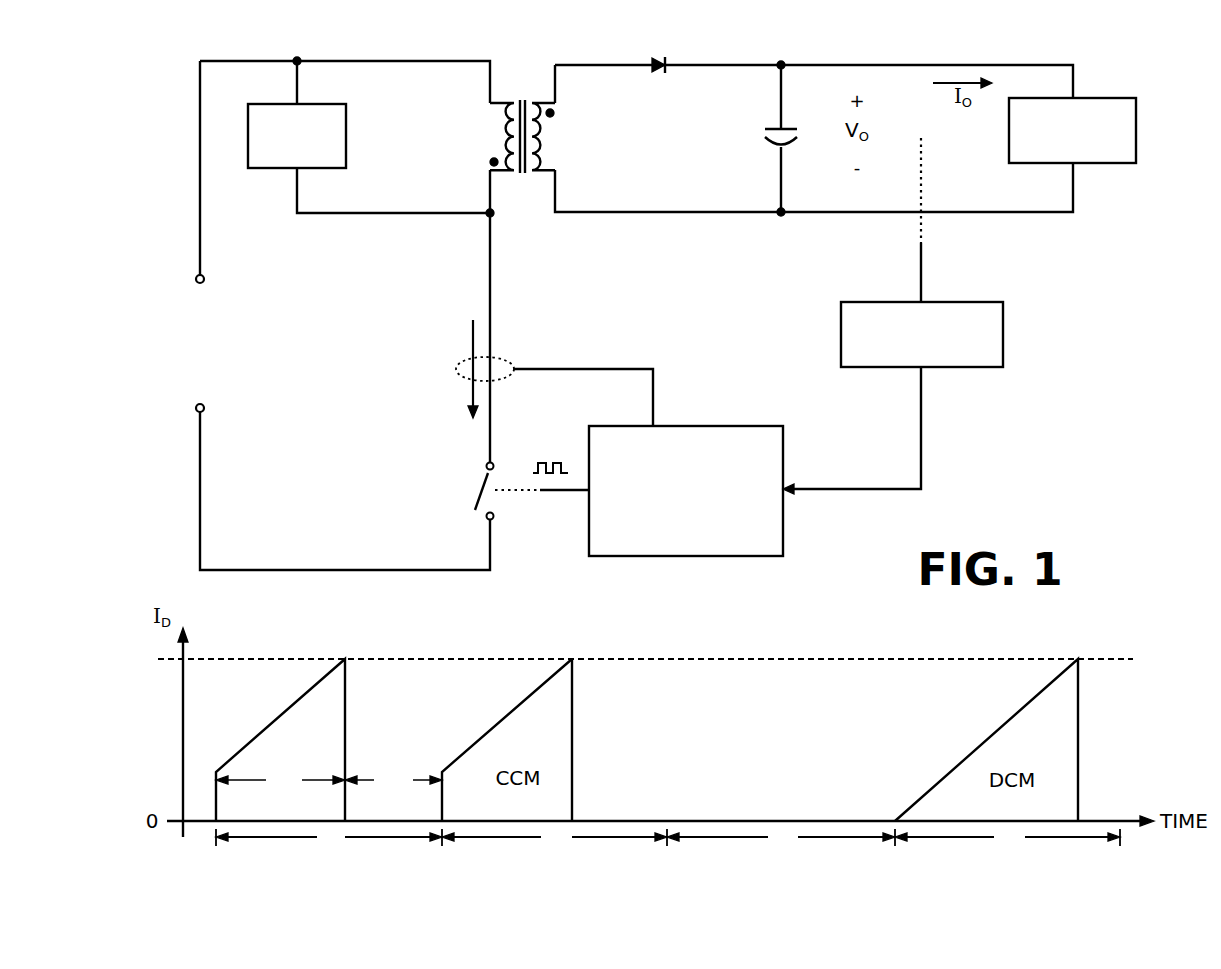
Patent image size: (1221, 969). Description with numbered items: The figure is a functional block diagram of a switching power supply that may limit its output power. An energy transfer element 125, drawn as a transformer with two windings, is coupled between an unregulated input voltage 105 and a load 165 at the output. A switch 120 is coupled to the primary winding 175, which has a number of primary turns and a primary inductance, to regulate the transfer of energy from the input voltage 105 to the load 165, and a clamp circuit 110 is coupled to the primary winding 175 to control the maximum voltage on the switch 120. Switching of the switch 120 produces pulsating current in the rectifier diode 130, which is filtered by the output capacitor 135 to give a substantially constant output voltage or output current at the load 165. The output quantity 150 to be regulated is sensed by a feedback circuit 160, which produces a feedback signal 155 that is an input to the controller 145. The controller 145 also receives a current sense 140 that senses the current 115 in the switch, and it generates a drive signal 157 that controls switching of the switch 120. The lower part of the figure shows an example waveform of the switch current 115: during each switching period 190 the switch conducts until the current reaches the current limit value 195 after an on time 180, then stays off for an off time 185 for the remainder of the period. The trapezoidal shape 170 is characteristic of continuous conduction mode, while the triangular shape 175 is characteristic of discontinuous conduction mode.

The unregulated input voltage VIN 105 is at (172, 366).
The clamp circuit 110 is at (283, 176).
The current ID 115 is at (457, 320).
The switch S1 120 is at (475, 470).
The energy transfer element T1 125 is at (521, 203).
The rectifier D1 130 is at (645, 82).
The capacitor C1 135 is at (770, 120).
The current sense 140 is at (652, 360).
The controller 145 is at (767, 420).
The output quantity UO 150 is at (912, 272).
The feedback signal UFB 155 is at (928, 445).
The drive signal 157 is at (552, 445).
The feedback circuit 160 is at (1010, 337).
The load 165 is at (1092, 88).
The trapezoidal shape 170 is at (410, 122).
The primary winding 175 is at (502, 118).
The time tON 180 is at (290, 765).
The time tOFF 185 is at (395, 762).
The switching period TS 190 is at (338, 852).
The current limit value IPEAK 195 is at (695, 655).